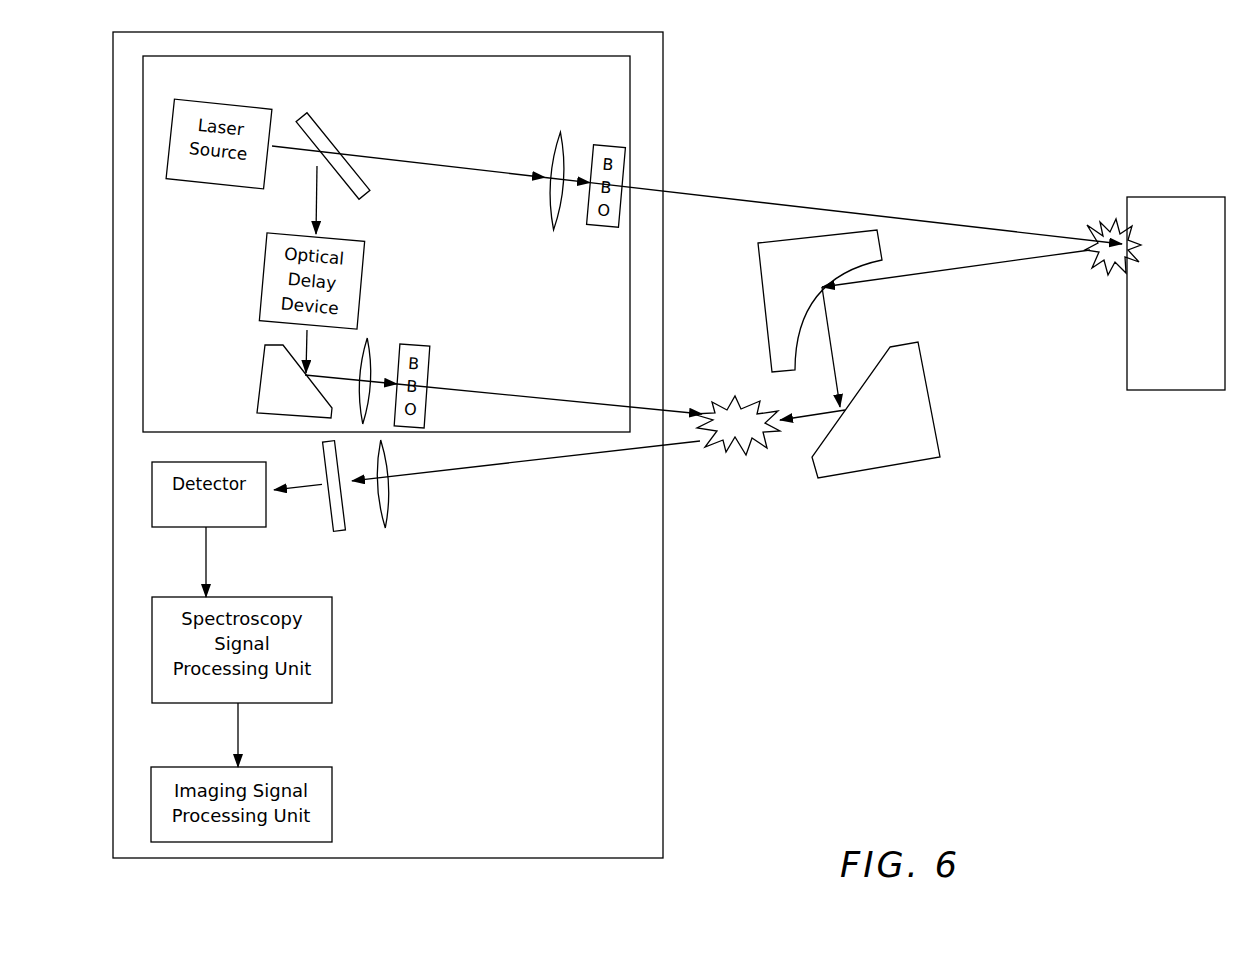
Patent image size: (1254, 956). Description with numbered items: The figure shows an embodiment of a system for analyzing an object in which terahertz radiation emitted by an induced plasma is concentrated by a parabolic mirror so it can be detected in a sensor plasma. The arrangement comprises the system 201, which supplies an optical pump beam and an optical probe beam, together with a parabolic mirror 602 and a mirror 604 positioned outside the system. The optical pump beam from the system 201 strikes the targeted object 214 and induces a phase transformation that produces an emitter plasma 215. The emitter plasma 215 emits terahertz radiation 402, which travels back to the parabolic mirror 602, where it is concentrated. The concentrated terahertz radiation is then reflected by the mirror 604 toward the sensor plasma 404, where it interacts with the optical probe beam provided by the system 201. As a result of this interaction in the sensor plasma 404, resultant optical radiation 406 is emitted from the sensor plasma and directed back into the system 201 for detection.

The system 201 is at (665, 50).
The targeted object 214 is at (1150, 197).
The emitter plasma 215 is at (1127, 233).
The terahertz radiation 402 is at (1005, 267).
The sensor plasma 404 is at (748, 450).
The optical radiation 406 is at (666, 445).
The parabolic mirror 602 is at (757, 276).
The mirror 604 is at (940, 447).